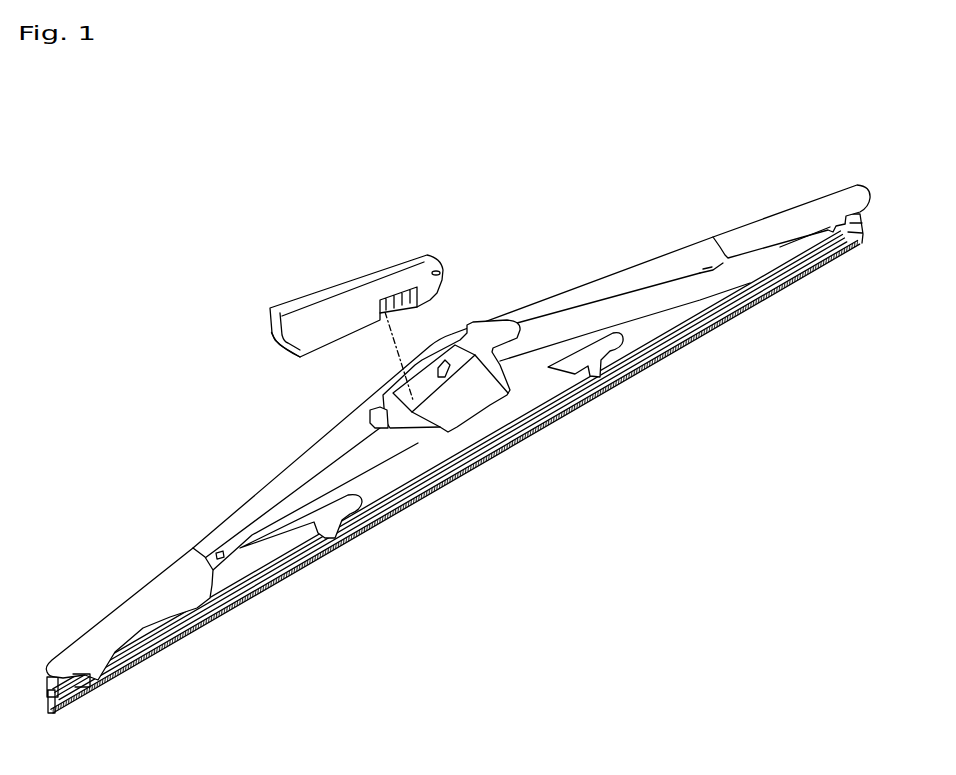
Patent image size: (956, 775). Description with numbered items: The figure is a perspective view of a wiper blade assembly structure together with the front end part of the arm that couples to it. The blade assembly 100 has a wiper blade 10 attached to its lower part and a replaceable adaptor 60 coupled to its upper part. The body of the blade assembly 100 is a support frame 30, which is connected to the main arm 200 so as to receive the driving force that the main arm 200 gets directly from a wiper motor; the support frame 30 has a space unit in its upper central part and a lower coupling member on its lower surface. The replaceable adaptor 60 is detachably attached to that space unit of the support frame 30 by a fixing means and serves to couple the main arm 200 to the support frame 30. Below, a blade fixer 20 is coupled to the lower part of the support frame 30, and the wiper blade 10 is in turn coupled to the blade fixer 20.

The blade assembly 100 is at (622, 168).
The wiper blade 10 is at (480, 462).
The blade fixer 20 is at (147, 593).
The support frame 30 is at (297, 478).
The replaceable adaptor 60 is at (467, 337).
The main arm 200 is at (363, 255).